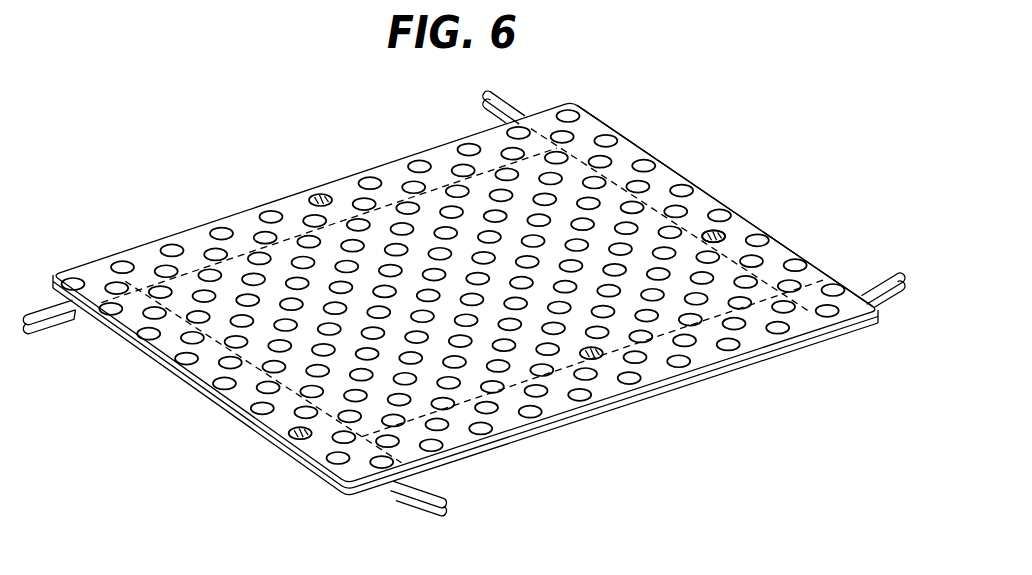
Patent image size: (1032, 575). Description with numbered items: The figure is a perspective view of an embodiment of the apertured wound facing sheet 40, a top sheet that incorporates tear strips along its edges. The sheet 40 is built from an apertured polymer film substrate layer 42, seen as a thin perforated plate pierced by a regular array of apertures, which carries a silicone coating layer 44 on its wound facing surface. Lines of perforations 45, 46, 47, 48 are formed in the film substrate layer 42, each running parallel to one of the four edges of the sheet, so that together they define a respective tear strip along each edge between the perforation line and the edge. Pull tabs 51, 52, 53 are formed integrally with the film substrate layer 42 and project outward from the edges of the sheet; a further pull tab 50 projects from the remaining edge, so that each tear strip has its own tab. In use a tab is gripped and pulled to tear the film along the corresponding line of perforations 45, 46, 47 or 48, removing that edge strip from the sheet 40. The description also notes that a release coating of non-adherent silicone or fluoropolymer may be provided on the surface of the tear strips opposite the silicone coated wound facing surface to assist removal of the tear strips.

The apertured wound facing sheet 40 is at (704, 126).
The apertured polymer film substrate layer 42 is at (716, 381).
The silicone coating layer 44 is at (705, 241).
The line of perforations 45 is at (343, 221).
The line of perforations 46 is at (788, 250).
The line of perforations 47 is at (609, 354).
The line of perforations 48 is at (330, 412).
The left mounting tab 50 is at (63, 335).
The pull tab 51 is at (517, 97).
The pull tab 52 is at (893, 290).
The pull tab 53 is at (448, 506).